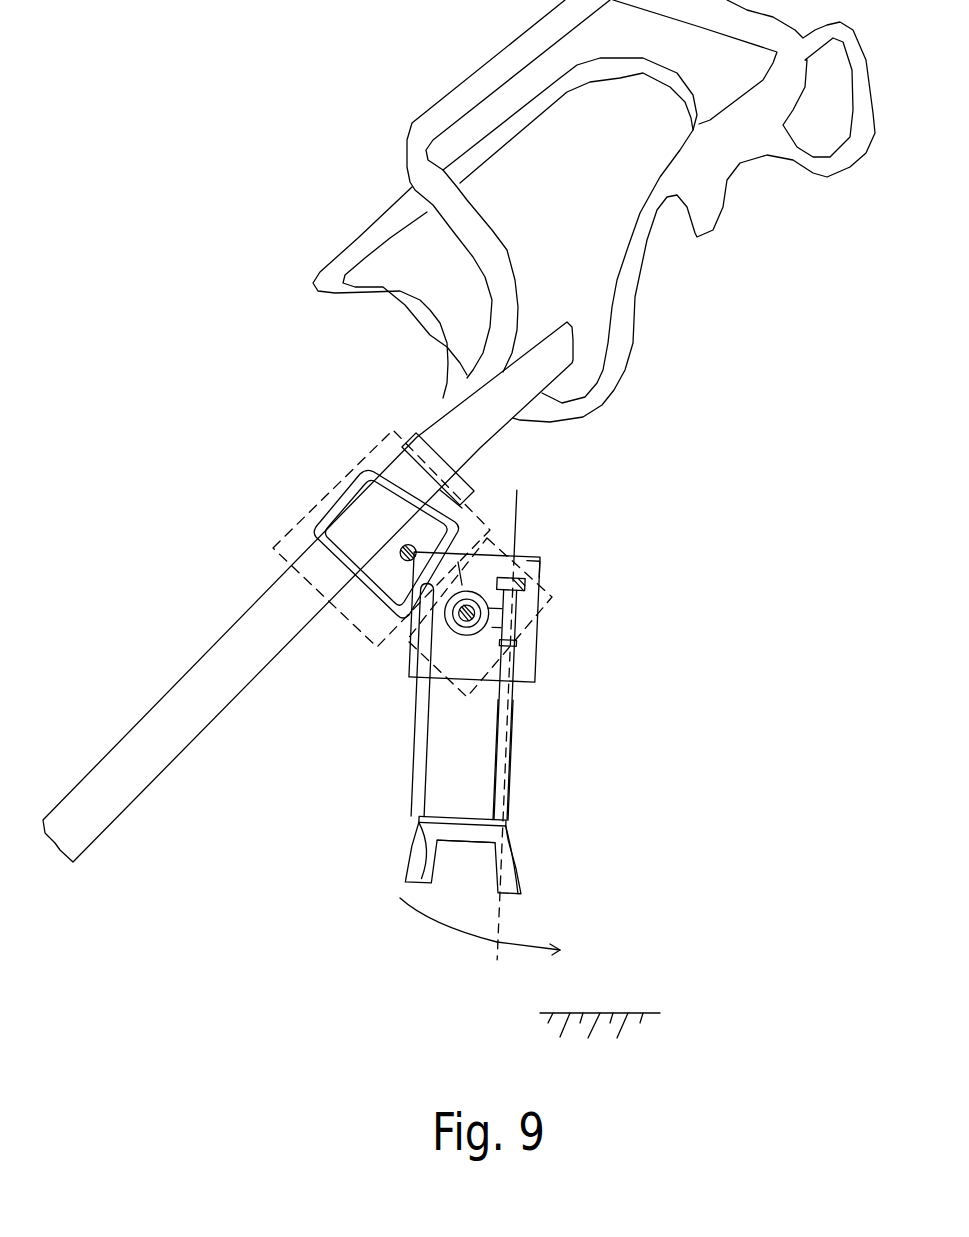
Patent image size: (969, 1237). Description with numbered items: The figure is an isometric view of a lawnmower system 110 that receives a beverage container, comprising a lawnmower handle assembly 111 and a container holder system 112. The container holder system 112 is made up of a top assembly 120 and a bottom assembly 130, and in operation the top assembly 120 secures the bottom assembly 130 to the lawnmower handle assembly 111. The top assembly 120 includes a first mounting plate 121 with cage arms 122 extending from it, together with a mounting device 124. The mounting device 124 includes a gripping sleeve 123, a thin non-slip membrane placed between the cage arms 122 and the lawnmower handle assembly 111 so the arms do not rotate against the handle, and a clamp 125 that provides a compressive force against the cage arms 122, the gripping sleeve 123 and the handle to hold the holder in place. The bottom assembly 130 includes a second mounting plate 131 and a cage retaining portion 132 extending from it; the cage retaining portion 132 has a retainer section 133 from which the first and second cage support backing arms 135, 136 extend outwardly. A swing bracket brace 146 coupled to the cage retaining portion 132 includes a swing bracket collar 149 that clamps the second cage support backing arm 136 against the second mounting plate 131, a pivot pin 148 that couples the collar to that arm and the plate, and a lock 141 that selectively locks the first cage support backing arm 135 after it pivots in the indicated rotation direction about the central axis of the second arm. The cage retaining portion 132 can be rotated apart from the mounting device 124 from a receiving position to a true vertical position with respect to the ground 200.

The lawnmower system 110 is at (459, 519).
The lawnmower handle assembly 111 is at (645, 323).
The container holder system 112 is at (501, 678).
The top assembly 120 is at (378, 628).
The first mounting plate 121 is at (527, 627).
The cage arms 122 is at (386, 453).
The gripping sleeve 123 is at (400, 472).
The mounting device 124 is at (327, 502).
The clamp 125 is at (458, 498).
The bottom assembly 130 is at (484, 722).
The second mounting plate 131 is at (525, 563).
The cage retaining portion 132 is at (439, 738).
The retainer section 133 is at (452, 813).
The first cage support backing arm 135 is at (422, 742).
The second cage support backing arm 136 is at (512, 718).
The lock 141 is at (523, 582).
The swing bracket brace 146 is at (470, 643).
The pivot pin 148 is at (462, 618).
The swing bracket collar 149 is at (462, 585).
The ground 200 is at (607, 1012).